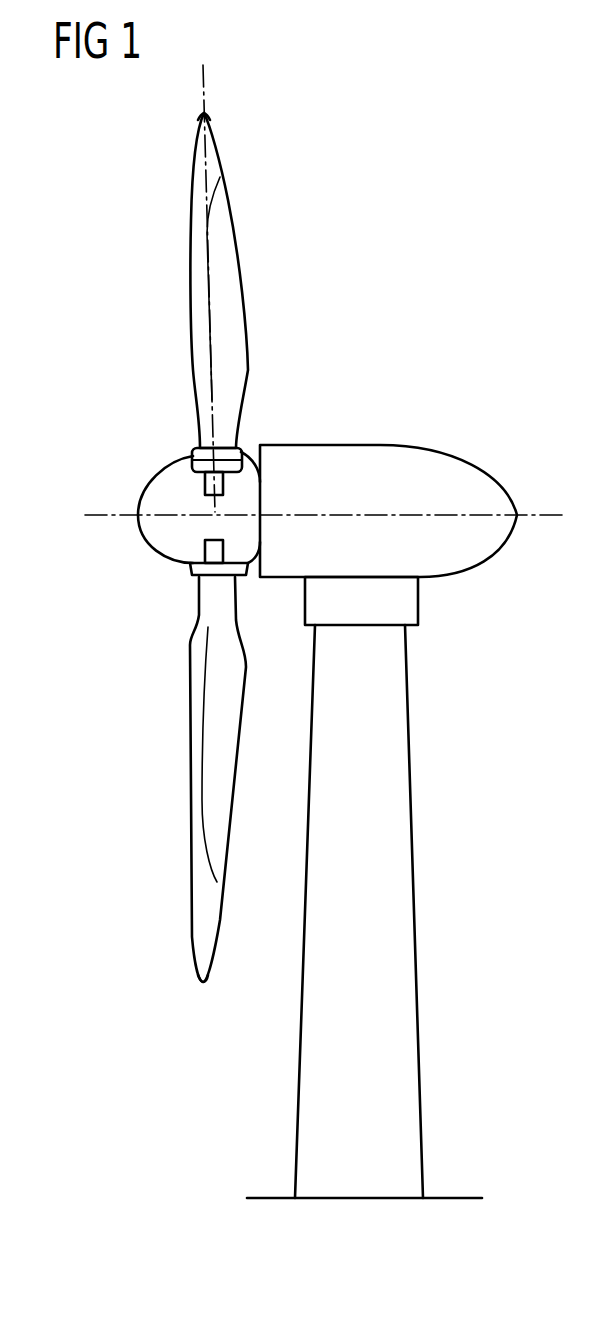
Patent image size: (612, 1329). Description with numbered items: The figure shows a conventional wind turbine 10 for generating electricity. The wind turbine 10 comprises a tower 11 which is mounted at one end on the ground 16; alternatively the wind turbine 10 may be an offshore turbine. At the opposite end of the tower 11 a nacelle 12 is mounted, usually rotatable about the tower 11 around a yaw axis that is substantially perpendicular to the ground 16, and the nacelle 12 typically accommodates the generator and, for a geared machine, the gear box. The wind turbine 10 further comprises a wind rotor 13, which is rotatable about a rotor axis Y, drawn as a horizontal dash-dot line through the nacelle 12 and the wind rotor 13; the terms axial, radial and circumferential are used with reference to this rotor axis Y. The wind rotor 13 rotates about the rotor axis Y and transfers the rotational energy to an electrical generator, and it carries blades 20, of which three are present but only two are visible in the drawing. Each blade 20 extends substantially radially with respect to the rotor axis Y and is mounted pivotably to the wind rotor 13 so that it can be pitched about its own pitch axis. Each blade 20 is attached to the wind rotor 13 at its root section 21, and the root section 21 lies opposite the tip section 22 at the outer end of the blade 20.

The wind turbine 10 is at (466, 340).
The tower 11 is at (405, 872).
The nacelle 12 is at (357, 445).
The wind rotor 13 is at (130, 537).
The ground 16 is at (453, 1197).
The blade 20 is at (190, 278).
The root section 21 is at (228, 450).
The tip section 22 is at (207, 113).
The rotor axis Y is at (545, 515).